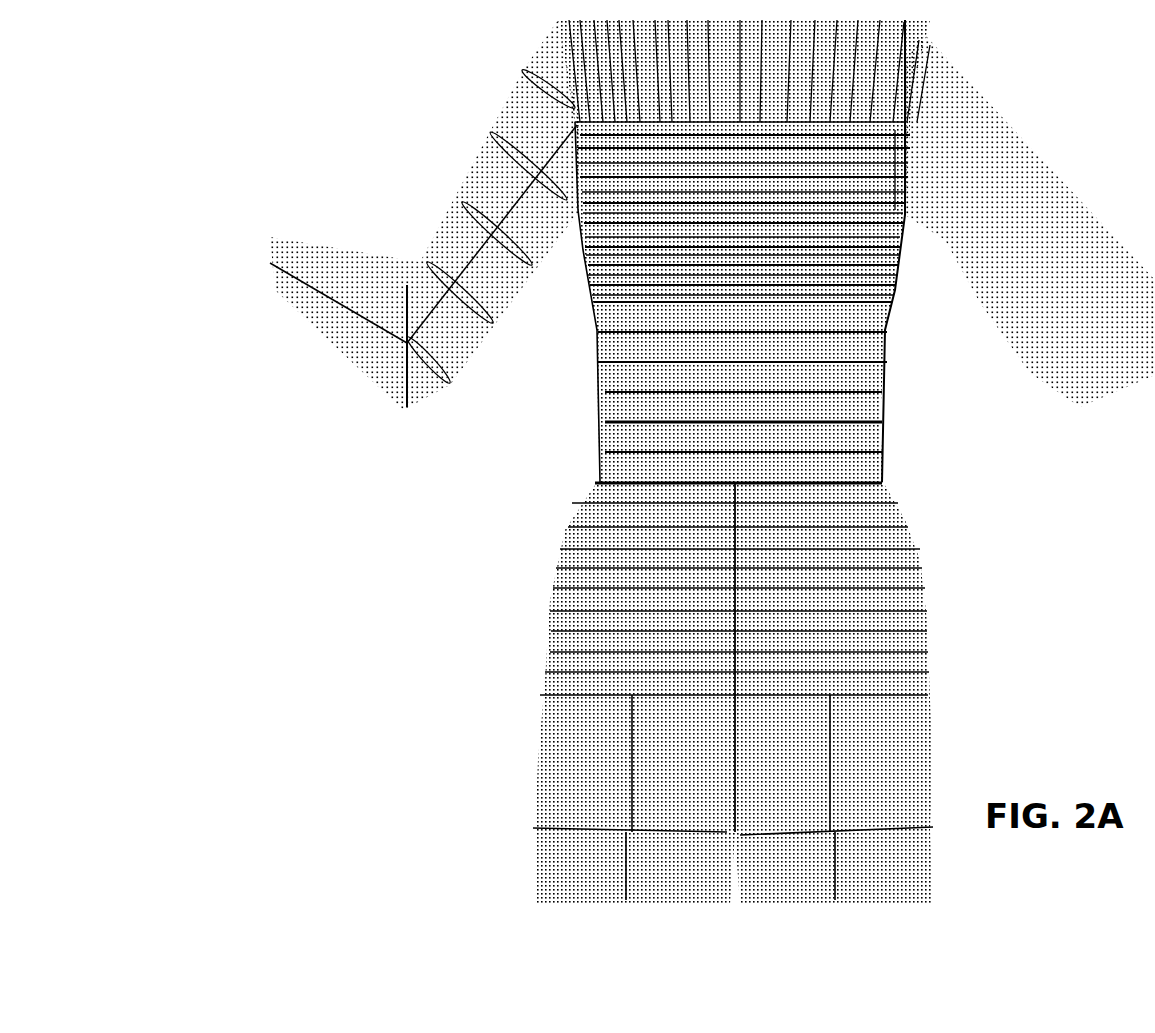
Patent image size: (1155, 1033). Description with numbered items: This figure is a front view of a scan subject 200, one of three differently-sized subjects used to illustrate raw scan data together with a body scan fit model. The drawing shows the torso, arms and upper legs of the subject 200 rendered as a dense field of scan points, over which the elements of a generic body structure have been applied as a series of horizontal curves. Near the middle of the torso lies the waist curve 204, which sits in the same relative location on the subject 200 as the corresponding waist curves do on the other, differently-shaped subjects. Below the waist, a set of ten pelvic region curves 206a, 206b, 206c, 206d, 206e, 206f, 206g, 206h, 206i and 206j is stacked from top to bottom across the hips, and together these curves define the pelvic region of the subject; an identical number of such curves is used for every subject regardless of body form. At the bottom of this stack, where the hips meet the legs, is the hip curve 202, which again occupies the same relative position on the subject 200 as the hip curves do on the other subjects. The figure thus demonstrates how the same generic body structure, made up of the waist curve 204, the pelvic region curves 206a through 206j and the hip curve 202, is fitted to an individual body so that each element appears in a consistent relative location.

The subject 200 is at (402, 136).
The hip curve 202 is at (753, 698).
The waist curve 204 is at (763, 457).
The pelvic region curve 206a is at (757, 676).
The pelvic region curve 206b is at (760, 655).
The pelvic region curve 206c is at (760, 633).
The pelvic region curve 206d is at (760, 612).
The pelvic region curve 206e is at (760, 591).
The pelvic region curve 206f is at (759, 569).
The pelvic region curve 206g is at (762, 548).
The pelvic region curve 206h is at (908, 527).
The pelvic region curve 206i is at (898, 503).
The pelvic region curve 206j is at (882, 483).